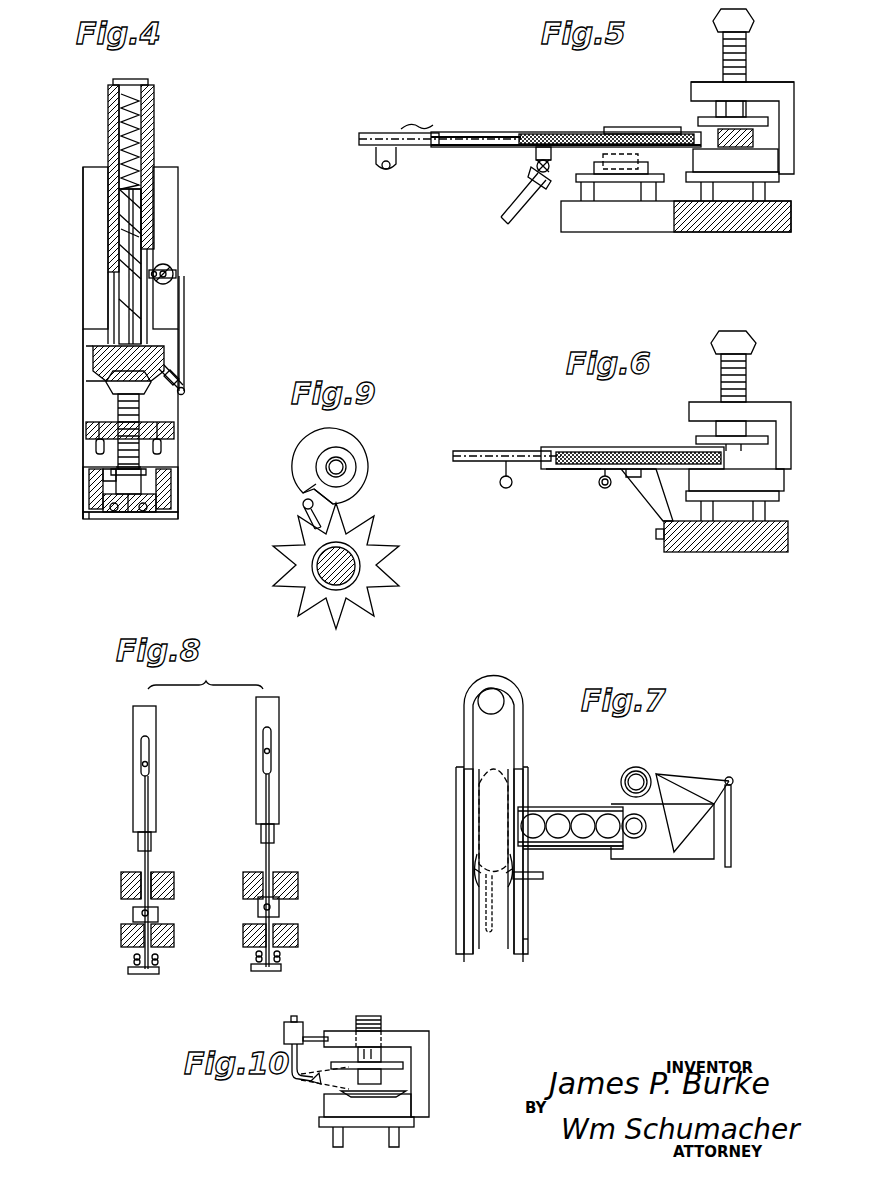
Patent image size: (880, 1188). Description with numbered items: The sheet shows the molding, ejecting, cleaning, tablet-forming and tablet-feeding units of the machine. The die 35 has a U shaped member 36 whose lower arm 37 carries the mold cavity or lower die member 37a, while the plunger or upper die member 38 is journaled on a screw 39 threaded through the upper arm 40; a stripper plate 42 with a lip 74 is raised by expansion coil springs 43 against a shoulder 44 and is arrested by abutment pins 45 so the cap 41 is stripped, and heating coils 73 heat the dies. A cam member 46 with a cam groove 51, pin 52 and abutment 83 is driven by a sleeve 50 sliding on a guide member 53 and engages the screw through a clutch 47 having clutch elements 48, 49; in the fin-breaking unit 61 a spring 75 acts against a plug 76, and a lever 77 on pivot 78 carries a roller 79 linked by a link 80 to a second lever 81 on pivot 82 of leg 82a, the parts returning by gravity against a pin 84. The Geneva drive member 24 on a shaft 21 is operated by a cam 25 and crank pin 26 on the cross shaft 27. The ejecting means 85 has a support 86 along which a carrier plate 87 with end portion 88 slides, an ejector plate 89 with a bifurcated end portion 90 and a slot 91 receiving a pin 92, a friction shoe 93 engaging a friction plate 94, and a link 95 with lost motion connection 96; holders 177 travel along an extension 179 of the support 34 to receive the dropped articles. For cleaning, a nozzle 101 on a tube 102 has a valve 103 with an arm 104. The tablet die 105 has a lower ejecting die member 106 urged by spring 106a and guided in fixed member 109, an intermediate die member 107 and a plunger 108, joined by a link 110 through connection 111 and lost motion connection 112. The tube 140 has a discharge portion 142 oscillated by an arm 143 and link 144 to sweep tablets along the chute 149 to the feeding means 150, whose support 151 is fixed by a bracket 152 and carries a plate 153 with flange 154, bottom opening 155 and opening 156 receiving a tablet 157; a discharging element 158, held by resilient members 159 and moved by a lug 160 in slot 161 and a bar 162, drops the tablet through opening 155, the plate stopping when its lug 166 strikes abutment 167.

In FIG. 9, the shaft 21 is at (336, 585).
In FIG. 9, the Geneva drive member 24 is at (378, 600).
In FIG. 9, the cam 25 is at (365, 474).
In FIG. 9, the crank pin 26 is at (305, 509).
In FIG. 9, the cross shaft 27 is at (337, 468).
In FIG. 6, the support 34 is at (712, 555).
In FIG. 4, the die 35 is at (76, 515).
In FIG. 5, the die 35 is at (700, 80).
In FIG. 6, the die 35 is at (678, 430).
In FIG. 10, the U shaped member 36 is at (420, 1058).
In FIG. 4, the lower arm 37 is at (175, 512).
In FIG. 4, the lower die member 37a is at (100, 520).
In FIG. 4, the upper die member 38 is at (165, 497).
In FIG. 10, the upper die member 38 is at (382, 1078).
In FIG. 4, the screw 39 is at (138, 400).
In FIG. 5, the screw 39 is at (745, 55).
In FIG. 10, the screw 39 is at (380, 1022).
In FIG. 4, the upper arm 40 is at (160, 425).
In FIG. 5, the upper arm 40 is at (768, 92).
In FIG. 10, the upper arm 40 is at (340, 1032).
In FIG. 4, the cap 41 is at (128, 520).
In FIG. 5, the cap 41 is at (640, 128).
In FIG. 4, the stripper plate 42 is at (142, 472).
In FIG. 10, the stripper plate 42 is at (402, 1068).
In FIG. 4, the expansion coil springs 43 is at (170, 485).
In FIG. 4, the shoulder 44 is at (142, 455).
In FIG. 4, the abutment pins 45 is at (162, 445).
In FIG. 4, the cam member 46 is at (125, 240).
In FIG. 4, the clutch 47 is at (78, 373).
In FIG. 4, the clutch element 48 is at (110, 384).
In FIG. 4, the clutch element 49 is at (92, 355).
In FIG. 4, the sleeve 50 is at (107, 150).
In FIG. 4, the cam groove 51 is at (132, 228).
In FIG. 4, the pin 52 is at (140, 240).
In FIG. 4, the guide member 53 is at (165, 186).
In FIG. 4, the unit 61 is at (66, 188).
In FIG. 4, the electrical heating coils 73 is at (113, 520).
In FIG. 4, the shoulder 74 is at (103, 471).
In FIG. 4, the expansion coil spring 75 is at (122, 131).
In FIG. 4, the plug 76 is at (120, 80).
In FIG. 4, the lever 77 is at (184, 392).
In FIG. 4, the fixed pivot 78 is at (180, 386).
In FIG. 4, the roller 79 is at (176, 378).
In FIG. 4, the link 80 is at (184, 320).
In FIG. 4, the second lever 81 is at (172, 275).
In FIG. 4, the fixed pivot 82 is at (172, 285).
In FIG. 4, the leg 82a is at (162, 270).
In FIG. 4, the abutment 83 is at (112, 226).
In FIG. 4, the pin 84 is at (175, 272).
In FIG. 5, the ejecting means 85 is at (552, 96).
In FIG. 5, the support 86 is at (460, 152).
In FIG. 5, the carrier plate 87 is at (570, 150).
In FIG. 5, the end portion 88 is at (765, 160).
In FIG. 5, the ejector plate 89 is at (590, 133).
In FIG. 5, the bifurcated end portion 90 is at (758, 140).
In FIG. 5, the slot 91 is at (640, 128).
In FIG. 5, the pin 92 is at (715, 136).
In FIG. 5, the friction shoe 93 is at (418, 126).
In FIG. 5, the friction plate 94 is at (545, 148).
In FIG. 5, the link 95 is at (502, 228).
In FIG. 5, the lost motion pivotal connection 96 is at (535, 172).
In FIG. 10, the nozzle 101 is at (308, 1090).
In FIG. 10, the tube 102 is at (290, 1070).
In FIG. 10, the valve 103 is at (278, 1022).
In FIG. 10, the arm 104 is at (314, 1032).
In FIG. 8, the die 105 is at (100, 908).
In FIG. 8, the lower ejecting die member 106 is at (138, 892).
In FIG. 8, the expansion coil spring 106a is at (120, 962).
In FIG. 8, the intermediate die member 107 is at (120, 878).
In FIG. 7, the intermediate die member 107 is at (632, 852).
In FIG. 8, the upper die member 108 is at (137, 845).
In FIG. 8, the fixed member 109 is at (165, 940).
In FIG. 8, the link 110 is at (150, 808).
In FIG. 8, the connection 111 is at (158, 913).
In FIG. 8, the lost motion connection 112 is at (152, 758).
In FIG. 7, the secondary hopper 140 is at (652, 768).
In FIG. 7, the discharge portion 142 is at (678, 828).
In FIG. 7, the arm 143 is at (705, 778).
In FIG. 7, the link 144 is at (732, 820).
In FIG. 7, the chute 149 is at (575, 808).
In FIG. 7, the feeding means 150 is at (446, 760).
In FIG. 6, the support 151 is at (572, 472).
In FIG. 7, the support 151 is at (455, 908).
In FIG. 6, the bracket 152 is at (660, 492).
In FIG. 6, the plate 153 is at (548, 470).
In FIG. 7, the marginal flange 154 is at (467, 726).
In FIG. 6, the bottom opening 155 is at (732, 468).
In FIG. 7, the bottom opening 155 is at (492, 692).
In FIG. 7, the opening 156 is at (513, 738).
In FIG. 7, the tablet 157 is at (550, 818).
In FIG. 6, the tablet discharging element 158 is at (575, 452).
In FIG. 7, the tablet discharging element 158 is at (482, 814).
In FIG. 7, the resilient members 159 is at (474, 868).
In FIG. 6, the lug 160 is at (605, 490).
In FIG. 6, the slot 161 is at (585, 472).
In FIG. 7, the bar 162 is at (536, 880).
In FIG. 7, the lug 166 is at (528, 852).
In FIG. 7, the abutment 167 is at (524, 948).
In FIG. 5, the holders 177 is at (652, 180).
In FIG. 5, the extension 179 is at (620, 222).